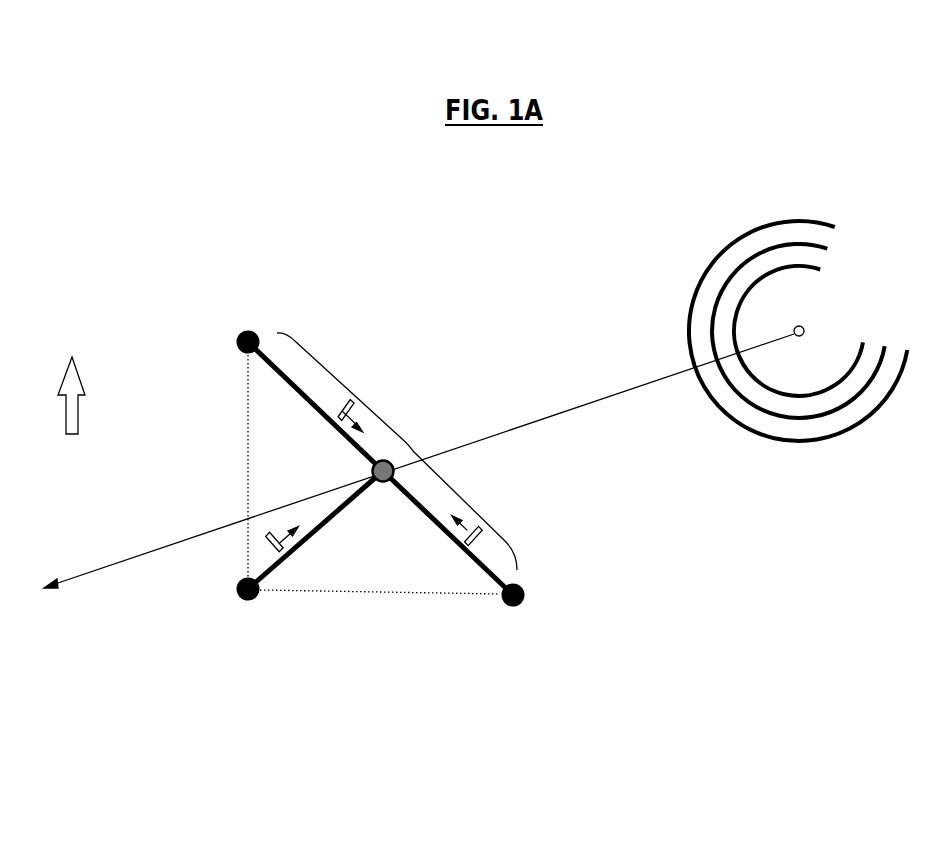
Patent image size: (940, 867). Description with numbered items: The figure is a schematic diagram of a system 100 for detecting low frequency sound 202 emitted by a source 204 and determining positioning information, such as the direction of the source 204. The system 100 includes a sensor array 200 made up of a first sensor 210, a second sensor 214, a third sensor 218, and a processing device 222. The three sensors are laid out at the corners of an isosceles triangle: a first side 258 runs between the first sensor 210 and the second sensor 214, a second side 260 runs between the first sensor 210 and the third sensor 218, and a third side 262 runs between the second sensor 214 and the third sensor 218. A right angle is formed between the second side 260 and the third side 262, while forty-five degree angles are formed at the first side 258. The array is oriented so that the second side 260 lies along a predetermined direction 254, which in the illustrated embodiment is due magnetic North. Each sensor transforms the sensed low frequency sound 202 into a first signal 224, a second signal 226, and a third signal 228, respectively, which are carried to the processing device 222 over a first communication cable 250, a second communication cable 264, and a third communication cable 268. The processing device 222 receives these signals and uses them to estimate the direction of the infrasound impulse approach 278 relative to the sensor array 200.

The system 100 is at (687, 702).
The sensor array 200 is at (212, 291).
The low frequency sound 202 is at (770, 331).
The source 204 is at (807, 329).
The first sensor 210 is at (253, 332).
The second sensor 214 is at (525, 595).
The third sensor 218 is at (239, 601).
The processing device 222 is at (373, 468).
The first signal 224 is at (352, 402).
The second signal 226 is at (503, 542).
The third signal 228 is at (268, 548).
The first communication cable 250 is at (297, 385).
The predetermined direction 254 is at (75, 420).
The first side 258 is at (410, 447).
The second side 260 is at (247, 427).
The third side 262 is at (385, 595).
The second communication cable 264 is at (425, 503).
The third communication cable 268 is at (318, 533).
The infrasound impulse approach 278 is at (525, 422).